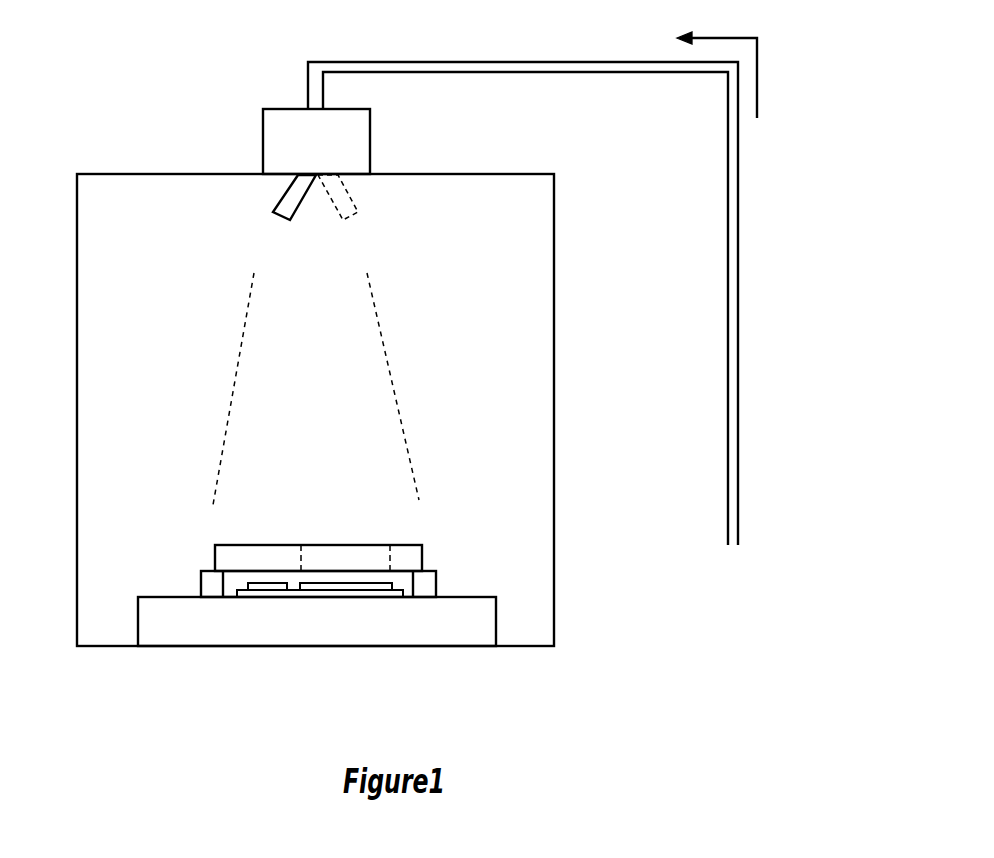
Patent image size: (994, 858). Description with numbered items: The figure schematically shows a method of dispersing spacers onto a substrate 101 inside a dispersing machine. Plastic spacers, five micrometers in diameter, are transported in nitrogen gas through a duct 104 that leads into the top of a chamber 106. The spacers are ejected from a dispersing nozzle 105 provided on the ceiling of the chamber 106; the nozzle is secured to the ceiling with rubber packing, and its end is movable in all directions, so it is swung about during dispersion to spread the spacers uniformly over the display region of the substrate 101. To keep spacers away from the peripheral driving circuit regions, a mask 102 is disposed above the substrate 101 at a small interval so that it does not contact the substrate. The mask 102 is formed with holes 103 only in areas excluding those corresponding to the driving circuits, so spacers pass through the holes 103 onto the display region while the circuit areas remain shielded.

The substrate 101 is at (383, 565).
The mask 102 is at (345, 547).
The holes 103 is at (318, 534).
The duct 104 is at (510, 275).
The dispersing nozzle 105 is at (316, 340).
The chamber 106 is at (162, 245).